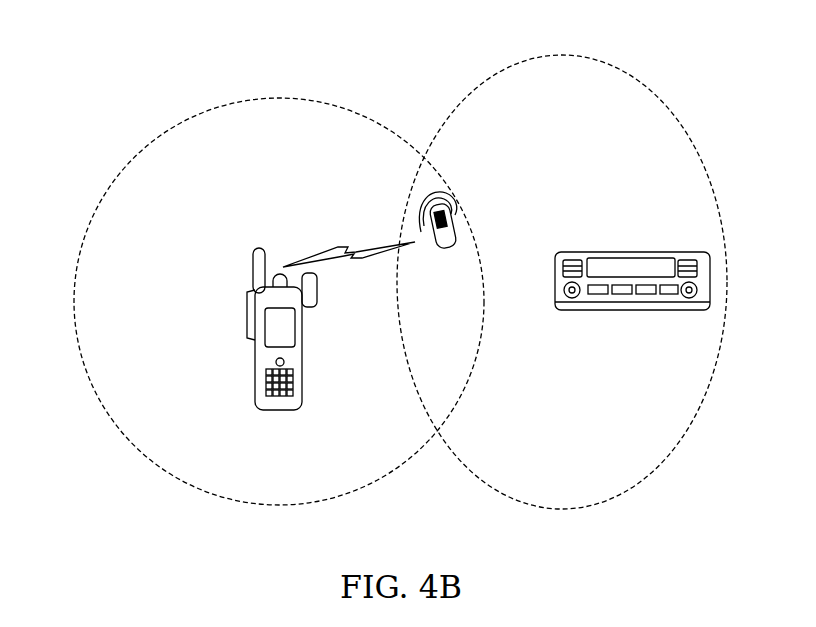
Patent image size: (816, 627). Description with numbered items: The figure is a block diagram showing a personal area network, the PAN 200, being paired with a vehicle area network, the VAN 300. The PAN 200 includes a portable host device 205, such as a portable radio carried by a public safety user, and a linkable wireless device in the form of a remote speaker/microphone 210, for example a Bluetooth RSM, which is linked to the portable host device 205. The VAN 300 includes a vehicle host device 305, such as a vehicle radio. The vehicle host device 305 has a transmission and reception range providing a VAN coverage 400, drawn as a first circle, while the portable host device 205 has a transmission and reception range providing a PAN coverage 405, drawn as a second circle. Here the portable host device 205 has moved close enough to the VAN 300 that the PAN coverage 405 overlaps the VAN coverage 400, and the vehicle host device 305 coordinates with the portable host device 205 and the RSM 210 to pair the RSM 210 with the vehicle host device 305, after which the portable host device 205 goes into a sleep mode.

The PAN 200 is at (145, 148).
The portable host device 205 is at (252, 342).
The remote speaker/microphone 210 is at (416, 224).
The vehicle area network 300 is at (562, 510).
The vehicle host device 305 is at (553, 274).
The VAN coverage 400 is at (452, 115).
The PAN coverage 405 is at (283, 508).